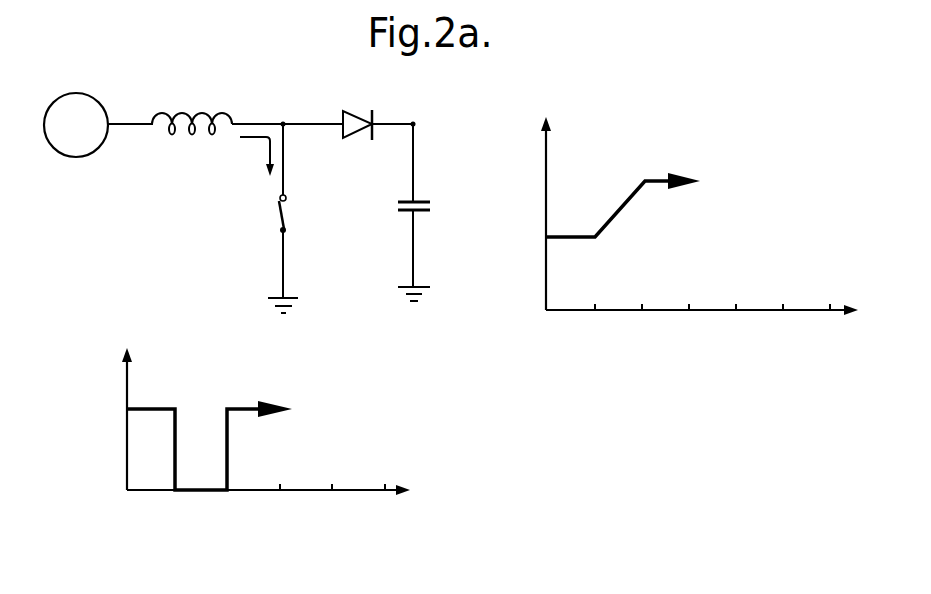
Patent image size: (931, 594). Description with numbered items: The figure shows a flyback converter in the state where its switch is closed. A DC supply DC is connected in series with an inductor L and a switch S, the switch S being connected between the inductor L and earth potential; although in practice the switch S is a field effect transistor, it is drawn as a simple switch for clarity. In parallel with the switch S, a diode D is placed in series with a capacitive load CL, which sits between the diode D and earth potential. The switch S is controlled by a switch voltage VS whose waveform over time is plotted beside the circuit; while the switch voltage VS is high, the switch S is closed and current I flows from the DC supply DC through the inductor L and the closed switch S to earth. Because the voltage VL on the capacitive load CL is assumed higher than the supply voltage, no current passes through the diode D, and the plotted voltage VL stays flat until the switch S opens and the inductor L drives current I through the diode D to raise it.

The DC supply DC is at (76, 125).
The inductor L is at (190, 111).
The current I is at (257, 156).
The diode D is at (378, 111).
The switch S is at (287, 218).
The capacitive load CL is at (428, 212).
The voltage on the capacitive load VL is at (680, 229).
The switch voltage VS is at (247, 433).